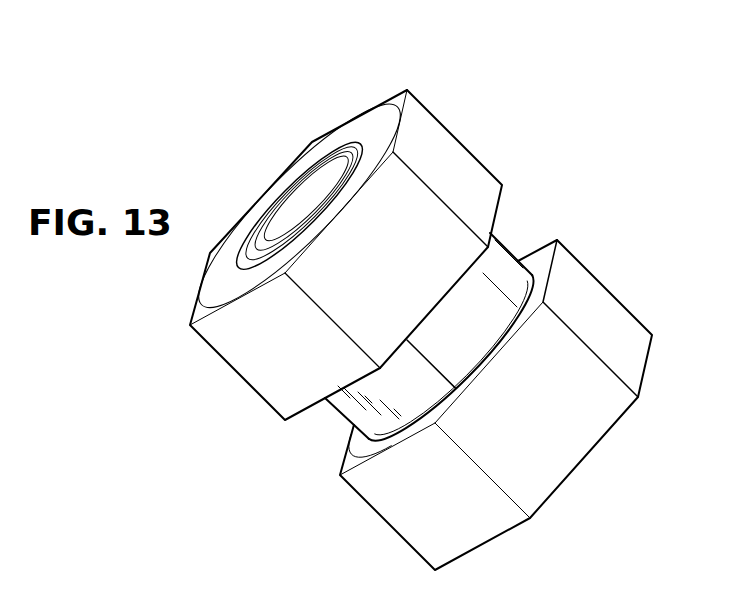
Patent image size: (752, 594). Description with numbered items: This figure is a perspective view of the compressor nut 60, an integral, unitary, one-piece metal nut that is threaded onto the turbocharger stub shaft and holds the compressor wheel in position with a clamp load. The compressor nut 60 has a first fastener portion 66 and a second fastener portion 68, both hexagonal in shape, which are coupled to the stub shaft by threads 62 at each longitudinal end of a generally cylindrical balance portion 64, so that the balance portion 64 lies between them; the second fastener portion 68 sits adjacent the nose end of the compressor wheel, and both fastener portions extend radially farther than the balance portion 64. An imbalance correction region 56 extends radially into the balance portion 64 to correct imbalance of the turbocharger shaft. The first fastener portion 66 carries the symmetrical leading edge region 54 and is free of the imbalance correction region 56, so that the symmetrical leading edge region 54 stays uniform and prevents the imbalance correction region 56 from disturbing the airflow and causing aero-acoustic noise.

The compressor nut 60 is at (492, 72).
The symmetrical leading edge region 54 is at (191, 325).
The imbalance correction region 56 is at (352, 405).
The threads 62 is at (315, 197).
The balance portion 64 is at (503, 255).
The first fastener portion 66 is at (457, 172).
The second fastener portion 68 is at (595, 297).